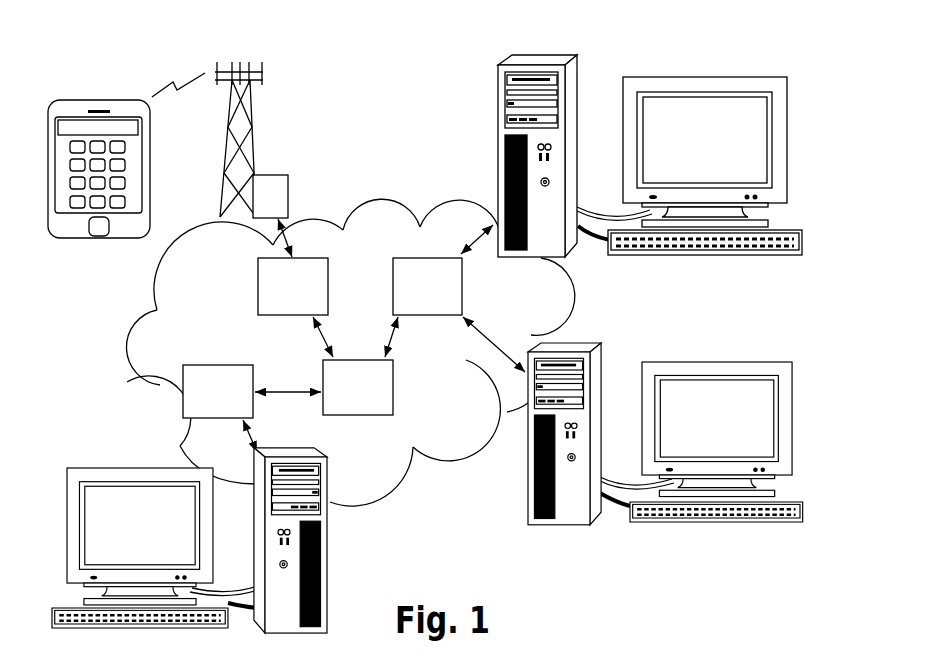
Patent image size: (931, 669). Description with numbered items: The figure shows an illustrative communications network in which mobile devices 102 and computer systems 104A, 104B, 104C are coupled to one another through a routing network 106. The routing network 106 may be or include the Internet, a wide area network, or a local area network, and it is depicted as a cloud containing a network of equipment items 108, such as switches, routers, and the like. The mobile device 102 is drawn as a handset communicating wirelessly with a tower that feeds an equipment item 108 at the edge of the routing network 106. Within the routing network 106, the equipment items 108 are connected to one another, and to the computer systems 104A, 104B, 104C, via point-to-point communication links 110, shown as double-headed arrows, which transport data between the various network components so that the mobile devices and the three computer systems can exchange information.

The mobile device 102 is at (99, 183).
The computer system 104A is at (577, 100).
The computer system 104B is at (600, 385).
The computer system 104C is at (328, 590).
The routing network 106 is at (450, 415).
The equipment item 108 is at (313, 257).
The point-to-point communication link 110 is at (471, 246).